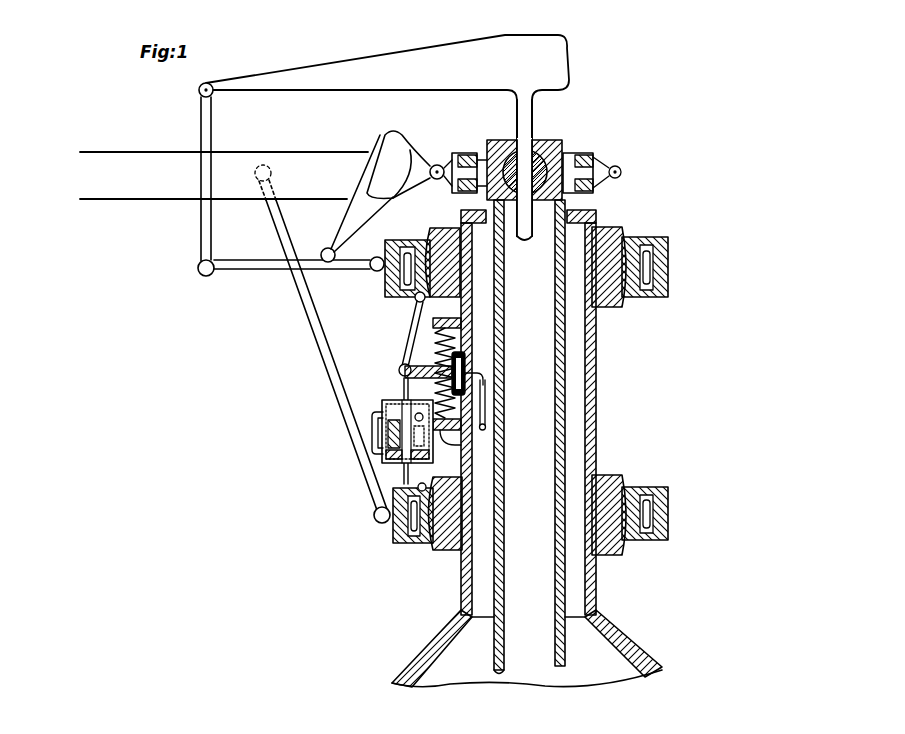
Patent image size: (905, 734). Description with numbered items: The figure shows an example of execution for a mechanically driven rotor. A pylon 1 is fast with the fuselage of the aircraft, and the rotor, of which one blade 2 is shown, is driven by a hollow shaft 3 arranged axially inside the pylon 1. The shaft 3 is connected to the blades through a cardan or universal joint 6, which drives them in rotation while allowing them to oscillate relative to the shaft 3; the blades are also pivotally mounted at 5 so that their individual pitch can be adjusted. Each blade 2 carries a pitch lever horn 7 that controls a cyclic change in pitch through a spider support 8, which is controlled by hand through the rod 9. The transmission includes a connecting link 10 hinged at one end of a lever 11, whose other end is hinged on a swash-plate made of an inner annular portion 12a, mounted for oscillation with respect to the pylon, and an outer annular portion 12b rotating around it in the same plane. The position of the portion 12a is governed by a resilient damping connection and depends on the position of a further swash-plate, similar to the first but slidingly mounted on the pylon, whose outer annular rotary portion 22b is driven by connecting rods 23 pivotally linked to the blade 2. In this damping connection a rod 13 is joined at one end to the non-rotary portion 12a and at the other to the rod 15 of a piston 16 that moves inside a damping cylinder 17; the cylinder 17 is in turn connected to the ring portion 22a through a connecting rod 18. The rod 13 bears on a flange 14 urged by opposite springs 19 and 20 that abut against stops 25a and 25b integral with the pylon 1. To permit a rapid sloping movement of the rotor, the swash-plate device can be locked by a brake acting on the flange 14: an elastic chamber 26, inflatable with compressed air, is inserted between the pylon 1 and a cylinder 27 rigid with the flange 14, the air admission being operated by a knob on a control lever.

The pylon 1 is at (428, 635).
The blade 2 is at (108, 170).
The hollow shaft 3 is at (498, 650).
The pivot 5 is at (439, 164).
The cardan or universal joint 6 is at (458, 155).
The pitch lever horn 7 is at (342, 214).
The spider support 8 is at (452, 88).
The rod 9 is at (527, 123).
The connecting link 10 is at (212, 138).
The lever 11 is at (244, 270).
The inner annular portion 12a is at (425, 238).
The outer annular portion 12b is at (387, 244).
The rod 13 is at (417, 328).
The flange 14 is at (401, 370).
The piston rod 15 is at (372, 414).
The piston 16 is at (396, 424).
The damping cylinder 17 is at (380, 444).
The connecting rod 18 is at (430, 472).
The spring 19 is at (487, 407).
The spring 20 is at (437, 340).
The ring portion 22a is at (427, 547).
The outer annular rotary portion 22b is at (385, 542).
The connecting rod 23 is at (322, 340).
The stop 25a is at (455, 326).
The stop 25b is at (465, 448).
The elastic chamber 26 is at (470, 380).
The cylinder 27 is at (466, 365).